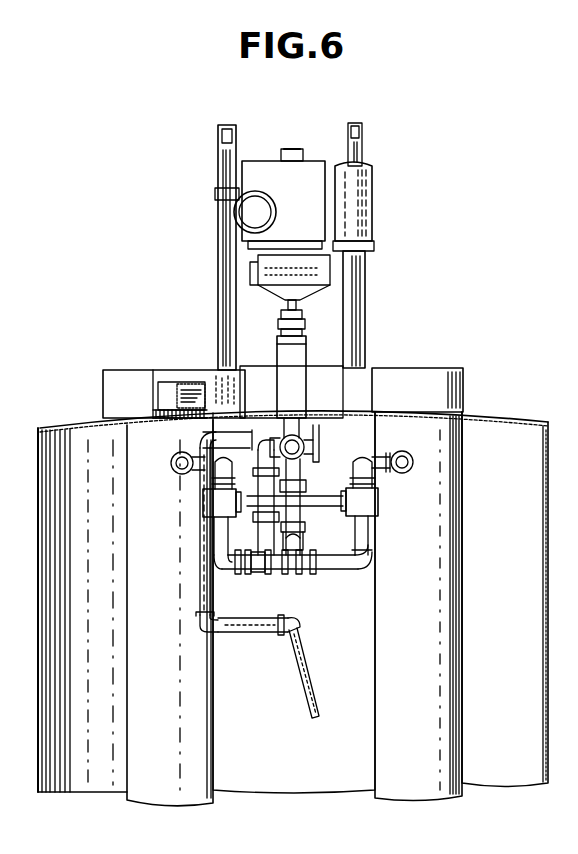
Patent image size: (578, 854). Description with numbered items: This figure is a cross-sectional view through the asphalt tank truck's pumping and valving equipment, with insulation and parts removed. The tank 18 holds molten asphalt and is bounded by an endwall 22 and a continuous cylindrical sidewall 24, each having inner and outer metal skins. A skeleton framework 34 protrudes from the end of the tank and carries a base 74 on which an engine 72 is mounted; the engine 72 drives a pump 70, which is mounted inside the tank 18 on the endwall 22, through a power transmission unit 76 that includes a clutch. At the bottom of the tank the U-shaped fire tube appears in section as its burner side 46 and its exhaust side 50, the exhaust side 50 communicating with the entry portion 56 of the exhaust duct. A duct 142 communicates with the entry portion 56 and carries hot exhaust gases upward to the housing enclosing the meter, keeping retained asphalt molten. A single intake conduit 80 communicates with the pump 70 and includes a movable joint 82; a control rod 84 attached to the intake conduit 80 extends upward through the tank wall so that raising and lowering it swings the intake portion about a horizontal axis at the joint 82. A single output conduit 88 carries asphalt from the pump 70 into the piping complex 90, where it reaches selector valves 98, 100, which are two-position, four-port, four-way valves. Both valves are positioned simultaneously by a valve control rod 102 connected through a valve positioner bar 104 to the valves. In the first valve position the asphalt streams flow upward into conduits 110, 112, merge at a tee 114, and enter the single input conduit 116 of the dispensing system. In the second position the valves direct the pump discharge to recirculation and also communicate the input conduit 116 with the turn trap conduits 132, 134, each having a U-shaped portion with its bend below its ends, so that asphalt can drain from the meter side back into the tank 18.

The tank 18 is at (287, 755).
The endwall 22 is at (100, 424).
The cylindrical sidewall 24 is at (541, 458).
The skeleton framework 34 is at (226, 136).
The burner side 46 is at (470, 572).
The exhaust side 50 is at (129, 580).
The entry portion 56 is at (165, 370).
The pump 70 is at (300, 430).
The engine 72 is at (258, 161).
The base 74 is at (350, 273).
The power transmission unit 76 is at (312, 350).
The intake conduit 80 is at (250, 634).
The movable joint 82 is at (206, 628).
The control rod 84 is at (320, 716).
The output conduit 88 is at (305, 512).
The piping complex 90 is at (303, 588).
The selector valve 98 is at (203, 494).
The selector valve 100 is at (380, 506).
The valve control rod 102 is at (319, 442).
The valve positioner bar 104 is at (339, 494).
The conduit 110 is at (200, 570).
The conduit 112 is at (370, 570).
The tee 114 is at (274, 570).
The input conduit 116 is at (238, 532).
The turn trap conduit 132 is at (172, 462).
The turn trap conduit 134 is at (416, 447).
The duct 142 is at (196, 382).